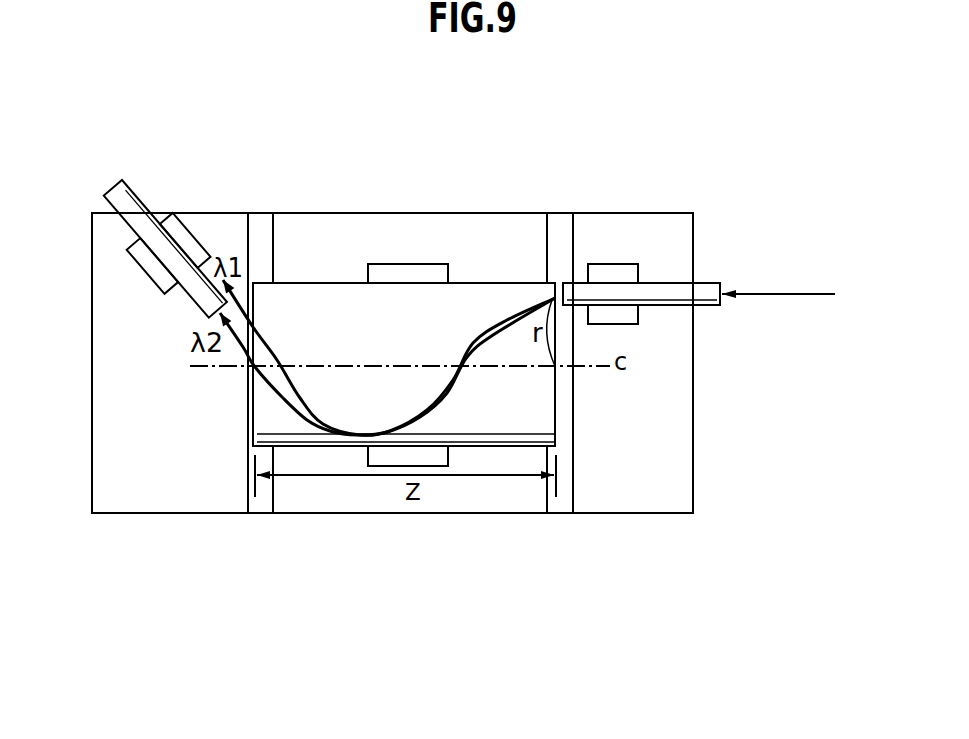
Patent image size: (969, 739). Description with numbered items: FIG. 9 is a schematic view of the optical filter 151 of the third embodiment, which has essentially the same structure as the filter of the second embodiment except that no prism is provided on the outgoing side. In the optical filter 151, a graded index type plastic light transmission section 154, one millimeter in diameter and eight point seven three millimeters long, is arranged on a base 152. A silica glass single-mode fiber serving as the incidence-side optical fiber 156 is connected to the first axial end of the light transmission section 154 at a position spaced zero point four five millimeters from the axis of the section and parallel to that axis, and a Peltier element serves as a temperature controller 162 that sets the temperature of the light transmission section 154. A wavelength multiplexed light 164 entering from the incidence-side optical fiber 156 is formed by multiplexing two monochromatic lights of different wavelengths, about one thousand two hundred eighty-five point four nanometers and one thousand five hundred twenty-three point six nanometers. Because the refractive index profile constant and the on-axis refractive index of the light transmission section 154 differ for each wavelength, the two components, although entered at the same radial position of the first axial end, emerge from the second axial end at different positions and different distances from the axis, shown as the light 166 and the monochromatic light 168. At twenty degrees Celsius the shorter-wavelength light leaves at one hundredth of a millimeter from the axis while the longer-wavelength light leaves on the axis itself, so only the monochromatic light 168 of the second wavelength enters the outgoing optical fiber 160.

The optical filter 151 is at (417, 163).
The base 152 is at (562, 513).
The light transmission section 154 is at (477, 283).
The incidence-side optical fiber 156 is at (650, 283).
The outgoing optical fiber 160 is at (142, 196).
The temperature controller 162 is at (307, 212).
The wavelength multiplexed light 164 is at (782, 293).
The light 166 is at (292, 393).
The monochromatic light 168 is at (283, 313).